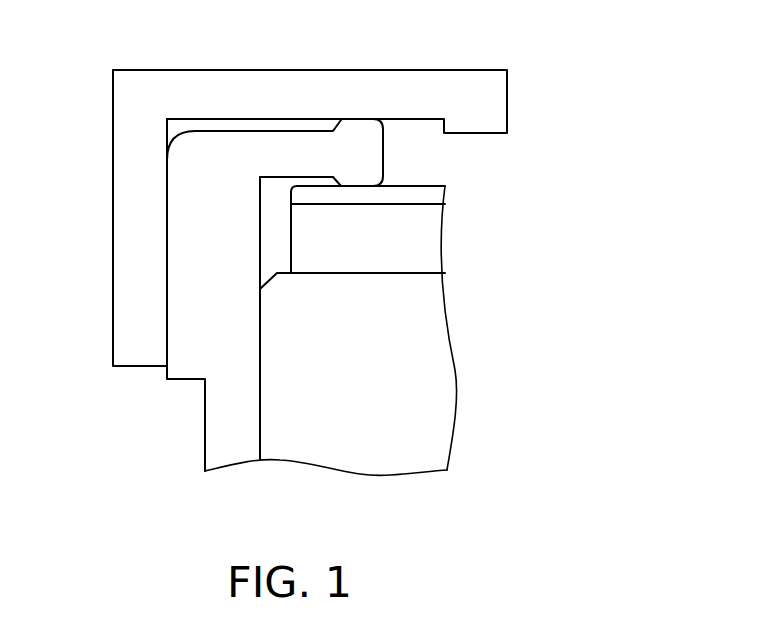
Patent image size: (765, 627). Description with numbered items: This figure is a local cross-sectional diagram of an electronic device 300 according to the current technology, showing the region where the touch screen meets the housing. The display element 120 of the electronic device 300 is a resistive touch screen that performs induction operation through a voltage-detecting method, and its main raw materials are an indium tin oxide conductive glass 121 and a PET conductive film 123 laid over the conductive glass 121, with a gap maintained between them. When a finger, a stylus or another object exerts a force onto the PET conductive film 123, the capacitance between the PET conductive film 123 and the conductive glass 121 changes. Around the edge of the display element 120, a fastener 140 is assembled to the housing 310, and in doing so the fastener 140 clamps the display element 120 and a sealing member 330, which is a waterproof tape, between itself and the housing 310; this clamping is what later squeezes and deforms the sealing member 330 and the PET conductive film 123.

The electronic device 300 is at (347, 259).
The housing 310 is at (292, 88).
The sealing member 330 is at (276, 236).
The display element 120 is at (470, 328).
The conductive glass 121 is at (433, 241).
The PET conductive film 123 is at (440, 195).
The fastener 140 is at (447, 425).